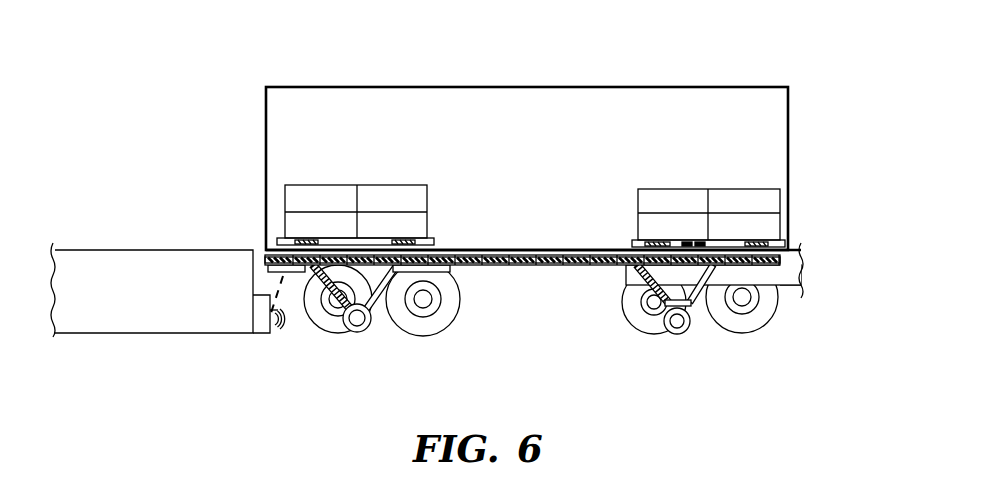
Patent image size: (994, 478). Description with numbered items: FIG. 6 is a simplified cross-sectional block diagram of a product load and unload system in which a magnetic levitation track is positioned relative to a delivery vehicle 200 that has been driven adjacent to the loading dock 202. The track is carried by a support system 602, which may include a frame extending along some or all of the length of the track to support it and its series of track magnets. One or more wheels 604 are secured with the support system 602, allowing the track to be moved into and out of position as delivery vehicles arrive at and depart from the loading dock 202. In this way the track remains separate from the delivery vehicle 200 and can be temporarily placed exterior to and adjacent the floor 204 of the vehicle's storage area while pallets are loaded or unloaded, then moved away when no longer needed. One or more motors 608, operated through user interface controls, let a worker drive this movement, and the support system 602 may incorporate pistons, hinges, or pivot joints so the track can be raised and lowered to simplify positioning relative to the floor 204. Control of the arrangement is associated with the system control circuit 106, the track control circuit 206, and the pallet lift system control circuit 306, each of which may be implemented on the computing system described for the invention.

The delivery vehicle 200 is at (605, 84).
The loading dock 202 is at (122, 255).
The floor 204 is at (507, 246).
The track control circuit 206 is at (296, 272).
The system control circuit 106 is at (263, 320).
The pallet lift system control circuit 306 is at (683, 243).
The support system 602 is at (376, 327).
The wheels 604 is at (353, 332).
The motors 608 is at (691, 307).